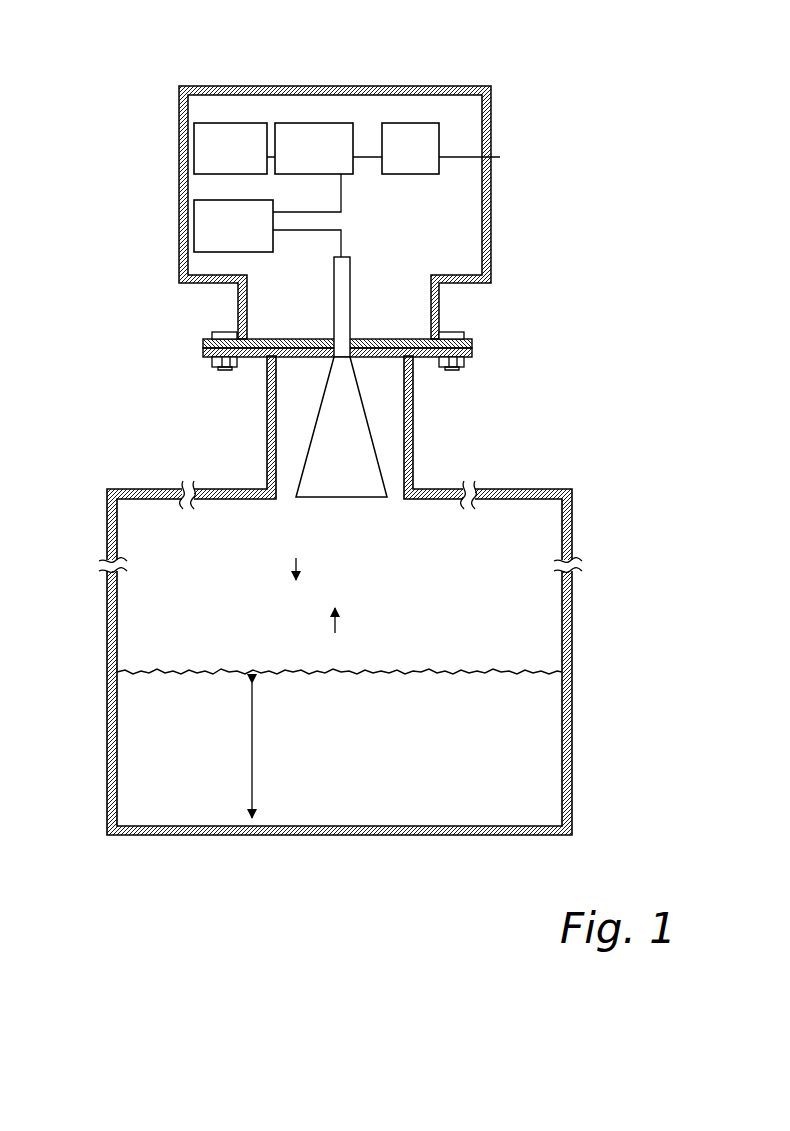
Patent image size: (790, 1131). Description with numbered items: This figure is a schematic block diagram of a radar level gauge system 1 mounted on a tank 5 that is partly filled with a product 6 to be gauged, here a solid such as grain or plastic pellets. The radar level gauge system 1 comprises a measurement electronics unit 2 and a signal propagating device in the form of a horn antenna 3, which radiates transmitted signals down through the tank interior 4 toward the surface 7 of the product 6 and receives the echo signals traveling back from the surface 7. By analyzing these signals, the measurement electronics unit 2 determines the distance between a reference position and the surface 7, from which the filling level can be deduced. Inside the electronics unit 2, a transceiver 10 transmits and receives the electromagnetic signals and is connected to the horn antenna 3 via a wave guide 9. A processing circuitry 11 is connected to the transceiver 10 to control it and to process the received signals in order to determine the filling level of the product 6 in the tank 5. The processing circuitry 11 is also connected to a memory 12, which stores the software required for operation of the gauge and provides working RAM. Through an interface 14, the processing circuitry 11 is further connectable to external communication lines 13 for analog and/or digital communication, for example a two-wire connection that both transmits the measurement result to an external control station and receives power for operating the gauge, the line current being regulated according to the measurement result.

The radar level gauge system 1 is at (350, 252).
The measurement electronics unit 2 is at (260, 85).
The horn antenna 3 is at (385, 480).
The tank interior / atmosphere 4 is at (177, 563).
The tank 5 is at (500, 489).
The product 6 is at (506, 772).
The surface 7 is at (527, 671).
The wave guide 9 is at (343, 246).
The transceiver 10 is at (194, 230).
The processing circuitry 11 is at (322, 122).
The memory 12 is at (194, 156).
The external communication lines 13 is at (500, 157).
The interface 14 is at (412, 122).